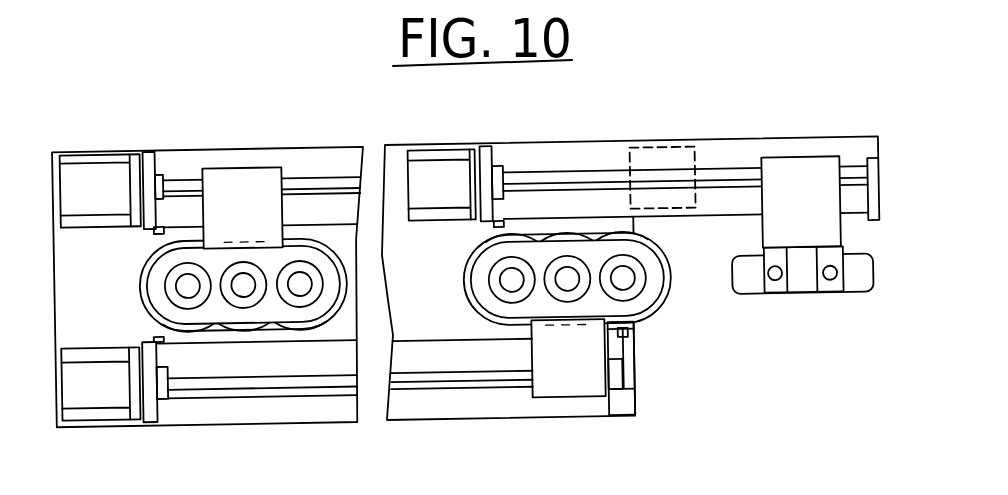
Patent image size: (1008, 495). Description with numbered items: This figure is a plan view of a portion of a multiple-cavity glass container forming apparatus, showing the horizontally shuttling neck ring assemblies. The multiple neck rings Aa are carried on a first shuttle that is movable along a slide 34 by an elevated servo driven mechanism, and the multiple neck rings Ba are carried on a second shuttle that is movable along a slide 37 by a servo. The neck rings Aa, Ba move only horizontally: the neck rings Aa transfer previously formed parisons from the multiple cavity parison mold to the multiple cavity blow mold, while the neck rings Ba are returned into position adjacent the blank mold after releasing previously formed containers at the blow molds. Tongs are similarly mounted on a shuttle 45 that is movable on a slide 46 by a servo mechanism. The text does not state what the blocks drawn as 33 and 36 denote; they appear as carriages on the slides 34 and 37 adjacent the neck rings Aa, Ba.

The slider block 33 is at (264, 218).
The slide 34 is at (319, 177).
The slider block 36 is at (576, 384).
The slide 37 is at (472, 378).
The shuttle 45 is at (804, 175).
The slide 46 is at (719, 180).
The multiple neck rings Aa is at (142, 288).
The multiple neck rings Ba is at (660, 306).